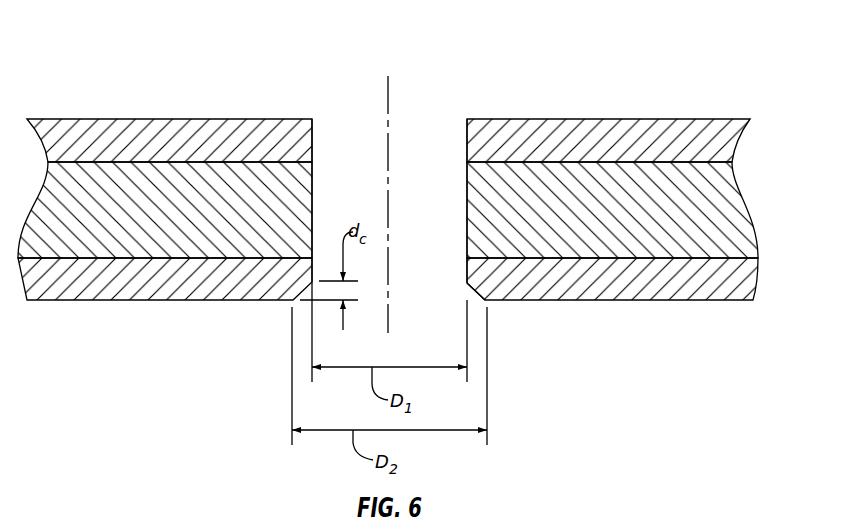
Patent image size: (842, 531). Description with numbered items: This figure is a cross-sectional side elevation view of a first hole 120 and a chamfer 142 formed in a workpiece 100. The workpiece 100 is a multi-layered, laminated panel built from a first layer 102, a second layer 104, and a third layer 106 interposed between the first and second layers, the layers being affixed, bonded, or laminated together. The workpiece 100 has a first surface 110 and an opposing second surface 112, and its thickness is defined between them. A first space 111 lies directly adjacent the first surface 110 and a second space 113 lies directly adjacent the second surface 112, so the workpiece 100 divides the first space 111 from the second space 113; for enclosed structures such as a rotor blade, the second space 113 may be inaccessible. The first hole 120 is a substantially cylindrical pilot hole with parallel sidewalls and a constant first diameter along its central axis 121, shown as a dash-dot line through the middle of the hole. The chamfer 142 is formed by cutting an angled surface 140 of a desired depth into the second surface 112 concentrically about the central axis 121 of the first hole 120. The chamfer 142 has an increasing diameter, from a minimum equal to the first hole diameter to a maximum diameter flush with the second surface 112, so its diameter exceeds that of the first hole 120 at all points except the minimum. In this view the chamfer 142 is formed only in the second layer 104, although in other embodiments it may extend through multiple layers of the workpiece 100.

The workpiece 100 is at (408, 198).
The first layer 102 is at (567, 137).
The second layer 104 is at (640, 283).
The third layer 106 is at (703, 218).
The first surface 110 is at (96, 118).
The first space 111 is at (197, 65).
The second surface 112 is at (98, 300).
The second space 113 is at (223, 410).
The first hole 120 is at (315, 140).
The central axis 121 is at (388, 97).
The angled surface 140 is at (467, 288).
The chamfer 142 is at (478, 293).